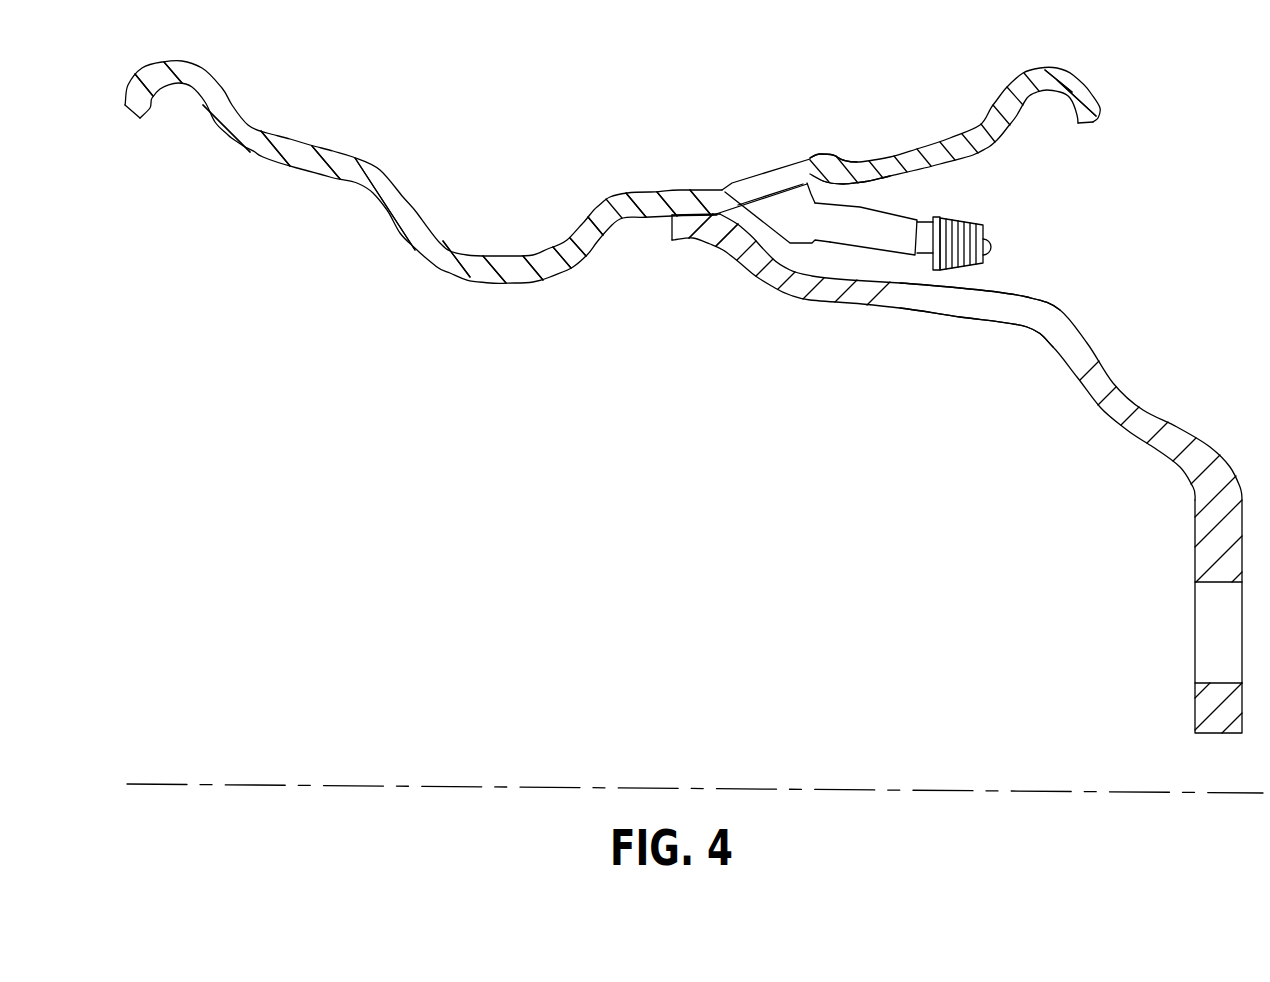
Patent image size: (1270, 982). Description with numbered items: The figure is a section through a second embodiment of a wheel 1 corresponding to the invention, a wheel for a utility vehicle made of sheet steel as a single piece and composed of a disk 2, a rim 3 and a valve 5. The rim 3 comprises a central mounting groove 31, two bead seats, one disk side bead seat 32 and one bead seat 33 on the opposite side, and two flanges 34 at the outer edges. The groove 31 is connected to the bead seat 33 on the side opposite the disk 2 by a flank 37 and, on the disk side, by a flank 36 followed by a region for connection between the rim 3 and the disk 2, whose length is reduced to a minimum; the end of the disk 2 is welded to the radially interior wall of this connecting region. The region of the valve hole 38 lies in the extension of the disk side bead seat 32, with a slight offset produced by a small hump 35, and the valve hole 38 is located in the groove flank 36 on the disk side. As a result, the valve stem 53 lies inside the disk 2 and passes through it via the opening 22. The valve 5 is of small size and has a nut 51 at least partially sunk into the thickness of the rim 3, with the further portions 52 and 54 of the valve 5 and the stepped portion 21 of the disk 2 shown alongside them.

The wheel 1 is at (425, 689).
The disk 2 is at (1200, 411).
The stepped seat of second rim part 21 is at (687, 227).
The opening 22 is at (978, 307).
The rim 3 is at (472, 157).
The central mounting groove 31 is at (490, 279).
The disk side bead seat 32 is at (939, 147).
The bead seat 33 is at (288, 150).
The flange 34 is at (190, 73).
The hump 35 is at (823, 152).
The flank 36 is at (571, 240).
The flank 37 is at (400, 222).
The valve hole 38 is at (863, 162).
The valve 5 is at (891, 243).
The nut 51 is at (754, 183).
The lower clamping arm 52 is at (787, 225).
The valve stem 53 is at (863, 237).
The clamping nut 54 is at (997, 247).